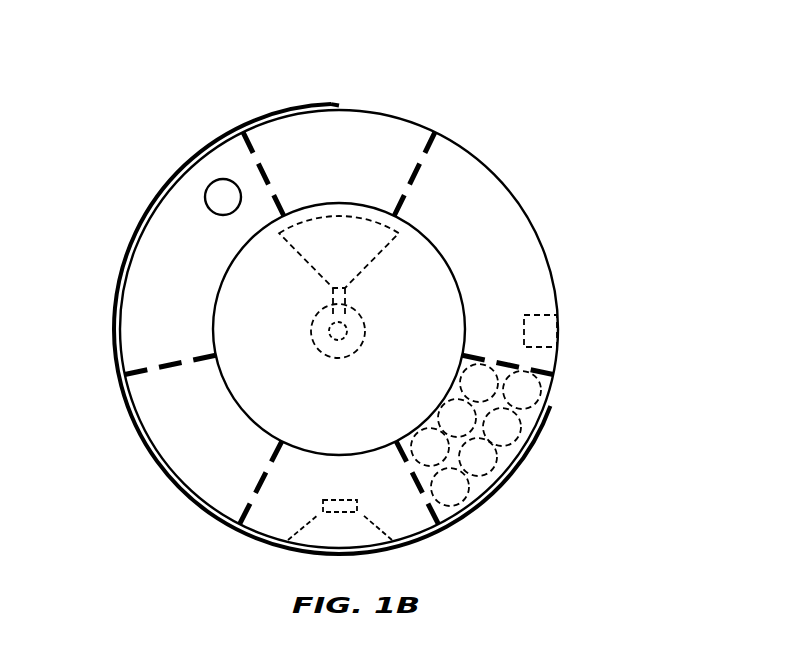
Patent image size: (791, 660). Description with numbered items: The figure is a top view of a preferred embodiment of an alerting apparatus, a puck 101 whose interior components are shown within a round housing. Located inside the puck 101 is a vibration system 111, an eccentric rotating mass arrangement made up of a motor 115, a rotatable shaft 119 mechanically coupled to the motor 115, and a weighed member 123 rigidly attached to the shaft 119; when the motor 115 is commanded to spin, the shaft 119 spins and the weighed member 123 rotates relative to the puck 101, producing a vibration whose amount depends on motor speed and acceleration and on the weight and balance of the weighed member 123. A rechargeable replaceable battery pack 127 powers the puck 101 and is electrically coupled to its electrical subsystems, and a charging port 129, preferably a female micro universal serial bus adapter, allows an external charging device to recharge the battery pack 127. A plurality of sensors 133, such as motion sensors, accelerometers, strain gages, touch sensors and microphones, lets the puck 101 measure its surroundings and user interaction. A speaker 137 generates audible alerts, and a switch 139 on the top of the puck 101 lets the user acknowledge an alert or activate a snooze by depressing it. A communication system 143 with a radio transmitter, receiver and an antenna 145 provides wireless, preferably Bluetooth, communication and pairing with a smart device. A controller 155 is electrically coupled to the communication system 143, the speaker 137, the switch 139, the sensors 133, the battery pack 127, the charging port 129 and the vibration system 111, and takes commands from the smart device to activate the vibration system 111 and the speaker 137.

The puck 101 is at (165, 140).
The vibration system 111 is at (303, 359).
The motor 115 is at (369, 328).
The rotatable shaft 119 is at (340, 331).
The weighed member 123 is at (302, 256).
The rechargeable replaceable battery pack 127 is at (502, 452).
The charging port 129 is at (559, 327).
The plurality of sensors 133 is at (220, 438).
The speaker 137 is at (359, 540).
The switch 139 is at (205, 200).
The communication system 143 is at (361, 170).
The antenna 145 is at (295, 110).
The controller 155 is at (206, 272).